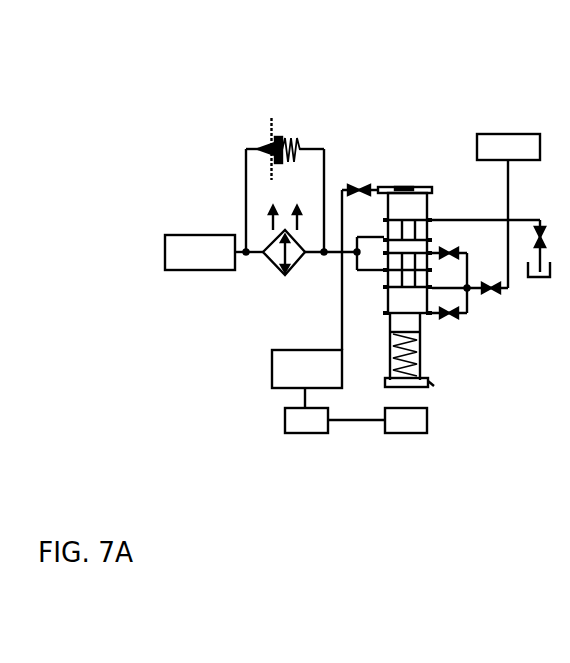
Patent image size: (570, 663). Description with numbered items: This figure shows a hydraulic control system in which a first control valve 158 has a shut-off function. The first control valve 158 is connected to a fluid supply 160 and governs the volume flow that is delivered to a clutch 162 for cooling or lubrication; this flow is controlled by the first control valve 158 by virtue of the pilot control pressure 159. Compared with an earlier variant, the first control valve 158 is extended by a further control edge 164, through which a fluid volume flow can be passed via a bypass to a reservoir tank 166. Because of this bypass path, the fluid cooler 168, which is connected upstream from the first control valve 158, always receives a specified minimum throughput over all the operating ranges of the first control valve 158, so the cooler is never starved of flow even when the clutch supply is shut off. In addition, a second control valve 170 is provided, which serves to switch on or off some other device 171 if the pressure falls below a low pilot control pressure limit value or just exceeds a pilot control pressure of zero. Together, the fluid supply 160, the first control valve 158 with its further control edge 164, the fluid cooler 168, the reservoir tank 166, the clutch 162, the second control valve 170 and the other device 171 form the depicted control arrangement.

The first control valve 158 is at (381, 170).
The pilot control pressure 159 is at (283, 368).
The fluid supply 160 is at (183, 250).
The clutch 162 is at (506, 145).
The further control edge 164 is at (428, 213).
The reservoir tank 166 is at (547, 280).
The fluid cooler 168 is at (272, 262).
The second control valve 170 is at (305, 425).
The other device 171 is at (398, 425).